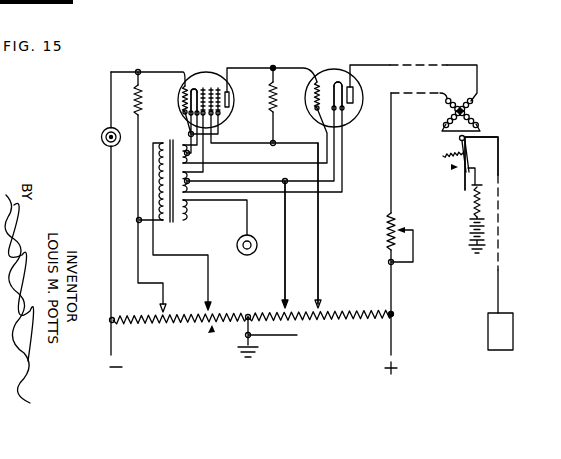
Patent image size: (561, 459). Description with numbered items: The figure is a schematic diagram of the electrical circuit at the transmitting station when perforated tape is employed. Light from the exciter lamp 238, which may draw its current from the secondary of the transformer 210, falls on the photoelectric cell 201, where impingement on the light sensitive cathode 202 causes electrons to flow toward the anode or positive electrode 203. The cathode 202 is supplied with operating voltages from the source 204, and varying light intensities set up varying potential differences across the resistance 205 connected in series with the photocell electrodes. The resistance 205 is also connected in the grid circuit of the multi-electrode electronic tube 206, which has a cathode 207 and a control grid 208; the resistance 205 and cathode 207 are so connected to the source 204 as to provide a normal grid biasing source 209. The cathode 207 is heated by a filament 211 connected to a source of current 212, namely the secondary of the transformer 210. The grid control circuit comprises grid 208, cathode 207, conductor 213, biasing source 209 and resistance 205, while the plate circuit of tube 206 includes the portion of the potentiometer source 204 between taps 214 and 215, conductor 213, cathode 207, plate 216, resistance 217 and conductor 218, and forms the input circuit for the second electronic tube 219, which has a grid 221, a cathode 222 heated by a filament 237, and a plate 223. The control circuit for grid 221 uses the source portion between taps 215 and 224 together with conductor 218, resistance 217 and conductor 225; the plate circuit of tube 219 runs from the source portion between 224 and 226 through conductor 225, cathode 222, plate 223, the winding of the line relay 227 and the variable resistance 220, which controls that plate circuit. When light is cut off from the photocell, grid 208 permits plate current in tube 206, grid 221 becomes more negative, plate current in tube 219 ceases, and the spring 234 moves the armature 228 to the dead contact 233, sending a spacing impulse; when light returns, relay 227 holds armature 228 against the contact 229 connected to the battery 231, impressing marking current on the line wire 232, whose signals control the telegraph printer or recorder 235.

The photoelectric cell 201 is at (105, 128).
The light sensitive cathode 202 is at (104, 141).
The anode or positive electrode 203 is at (104, 134).
The source 204 is at (211, 330).
The resistance 205 is at (130, 96).
The multi-electrode electronic tube 206 is at (190, 132).
The cathode 207 is at (203, 73).
The control grid 208 is at (190, 82).
The grid biasing source 209 is at (186, 326).
The transformer 210 is at (146, 183).
The filament 211 is at (186, 70).
The source of current 212 is at (152, 154).
The conductor 213 is at (153, 205).
The tap 214 is at (205, 326).
The tap 215 is at (328, 312).
The plate 216 is at (230, 114).
The resistance 217 is at (273, 67).
The conductor 218 is at (322, 215).
The second electronic tube 219 is at (316, 126).
The variable resistance 220 is at (401, 226).
The grid 221 is at (311, 59).
The cathode 222 is at (323, 72).
The plate 223 is at (387, 64).
The tap 224 is at (282, 308).
The conductor 225 is at (286, 228).
The tap 226 is at (396, 313).
The line relay 227 is at (478, 109).
The armature 228 is at (458, 139).
The contact 229 is at (470, 165).
The battery 231 is at (470, 238).
The line wire 232 is at (486, 137).
The dead contact 233 is at (451, 168).
The spring 234 is at (442, 157).
The telegraph printer or recorder 235 is at (490, 330).
The filament 237 is at (334, 82).
The exciter lamp 238 is at (251, 256).